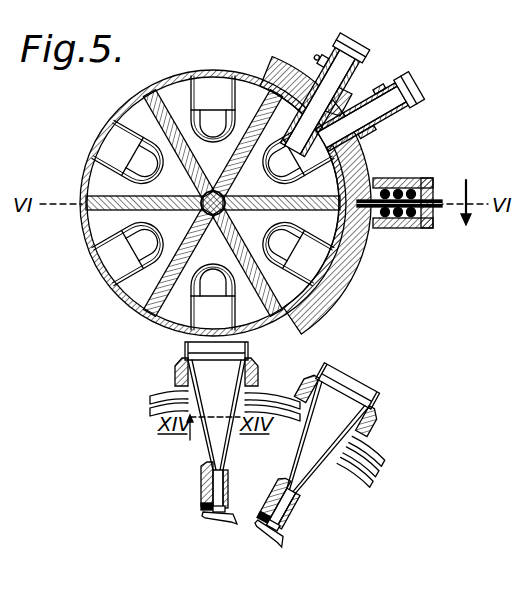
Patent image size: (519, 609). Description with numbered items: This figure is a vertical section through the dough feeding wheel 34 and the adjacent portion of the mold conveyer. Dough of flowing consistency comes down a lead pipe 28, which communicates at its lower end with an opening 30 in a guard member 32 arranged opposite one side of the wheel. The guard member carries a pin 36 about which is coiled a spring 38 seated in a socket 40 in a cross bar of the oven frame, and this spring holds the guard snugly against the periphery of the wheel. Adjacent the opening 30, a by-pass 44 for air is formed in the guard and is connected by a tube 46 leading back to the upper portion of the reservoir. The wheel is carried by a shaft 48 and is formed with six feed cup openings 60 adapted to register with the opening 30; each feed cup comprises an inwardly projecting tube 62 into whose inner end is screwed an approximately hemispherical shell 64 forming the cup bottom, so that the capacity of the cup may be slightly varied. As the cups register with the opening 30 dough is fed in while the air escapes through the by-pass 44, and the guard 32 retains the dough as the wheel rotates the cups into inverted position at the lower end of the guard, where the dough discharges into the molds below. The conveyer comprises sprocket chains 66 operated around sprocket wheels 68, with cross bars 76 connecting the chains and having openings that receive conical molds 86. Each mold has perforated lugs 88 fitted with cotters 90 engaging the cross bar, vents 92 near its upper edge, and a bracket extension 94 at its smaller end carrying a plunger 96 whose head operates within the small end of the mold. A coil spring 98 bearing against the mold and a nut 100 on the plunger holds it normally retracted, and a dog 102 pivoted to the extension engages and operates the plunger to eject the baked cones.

The lead pipe 28 is at (422, 106).
The opening 30 is at (376, 135).
The guard member 32 is at (343, 303).
The dough feeding wheel 34 is at (132, 312).
The pin 36 is at (434, 200).
The spring 38 is at (396, 228).
The socket 40 is at (415, 228).
The by-pass 44 is at (303, 77).
The tube 46 is at (348, 50).
The shaft 48 is at (201, 197).
The feed cup openings 60 is at (108, 143).
The inwardly projecting tube 62 is at (192, 100).
The hemispherical shell 64 is at (214, 122).
The sprocket chains 66 is at (268, 398).
The sprocket wheels 68 is at (355, 440).
The cross bars 76 is at (175, 366).
The molds 86 is at (228, 441).
The perforated lugs 88 is at (180, 410).
The cotters 90 is at (170, 403).
The vents 92 is at (249, 346).
The bracket extension 94 is at (199, 472).
The plunger 96 is at (206, 512).
The coil spring 98 is at (203, 494).
The nut 100 is at (222, 504).
The dog 102 is at (217, 518).